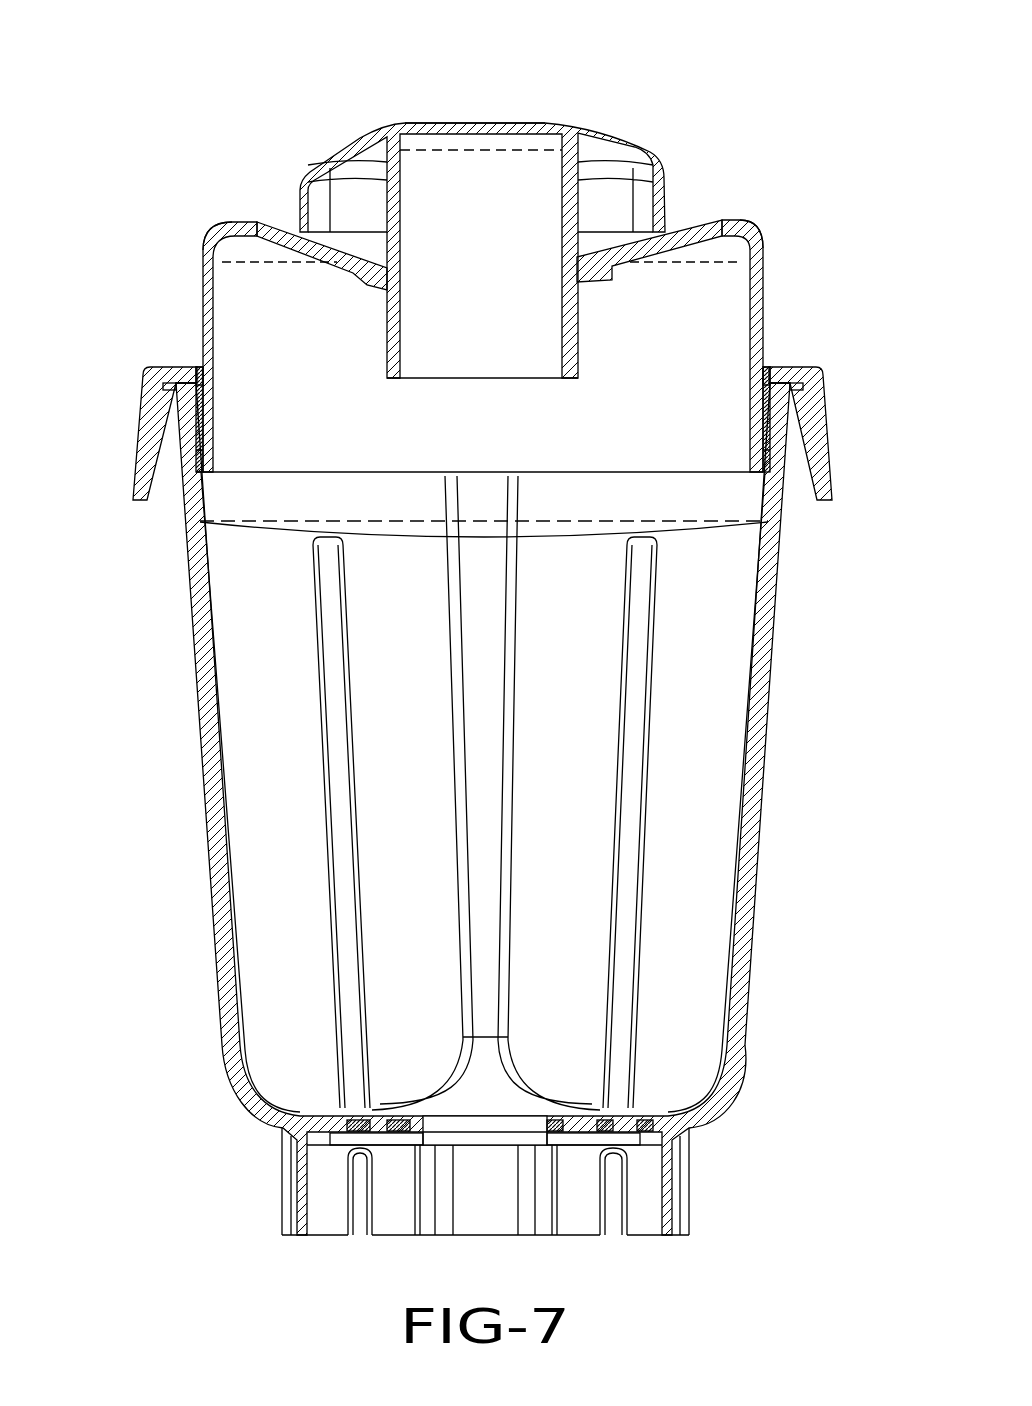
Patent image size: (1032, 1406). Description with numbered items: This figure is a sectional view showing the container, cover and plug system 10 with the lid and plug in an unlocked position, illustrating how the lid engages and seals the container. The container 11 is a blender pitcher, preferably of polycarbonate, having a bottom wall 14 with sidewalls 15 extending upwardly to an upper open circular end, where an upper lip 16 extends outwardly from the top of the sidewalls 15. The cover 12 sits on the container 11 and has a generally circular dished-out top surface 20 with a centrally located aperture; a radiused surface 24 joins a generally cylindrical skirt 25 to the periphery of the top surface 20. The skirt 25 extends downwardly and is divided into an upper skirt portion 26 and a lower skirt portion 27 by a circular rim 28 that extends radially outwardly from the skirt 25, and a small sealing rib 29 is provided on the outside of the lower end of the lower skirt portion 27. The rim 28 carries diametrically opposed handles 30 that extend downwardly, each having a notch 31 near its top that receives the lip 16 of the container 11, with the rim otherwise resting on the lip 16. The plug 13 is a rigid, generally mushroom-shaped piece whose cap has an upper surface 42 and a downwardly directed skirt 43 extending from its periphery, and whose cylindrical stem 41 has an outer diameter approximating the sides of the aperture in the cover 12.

The container, cover and plug system 10 is at (777, 116).
The container 11 is at (764, 792).
The cover 12 is at (768, 254).
The plug 13 is at (603, 126).
The bottom wall 14 is at (415, 1138).
The sidewalls 15 is at (222, 948).
The upper lip 16 is at (172, 378).
The top surface 20 is at (298, 243).
The radiused surface 24 is at (724, 228).
The skirt 25 is at (204, 235).
The upper skirt portion 26 is at (206, 297).
The lower skirt portion 27 is at (205, 437).
The circular rim 28 is at (188, 366).
The sealing rib 29 is at (206, 468).
The handles 30 is at (146, 470).
The notch 31 is at (163, 387).
The stem 41 is at (390, 348).
The upper surface 42 is at (470, 120).
The skirt 43 is at (298, 190).